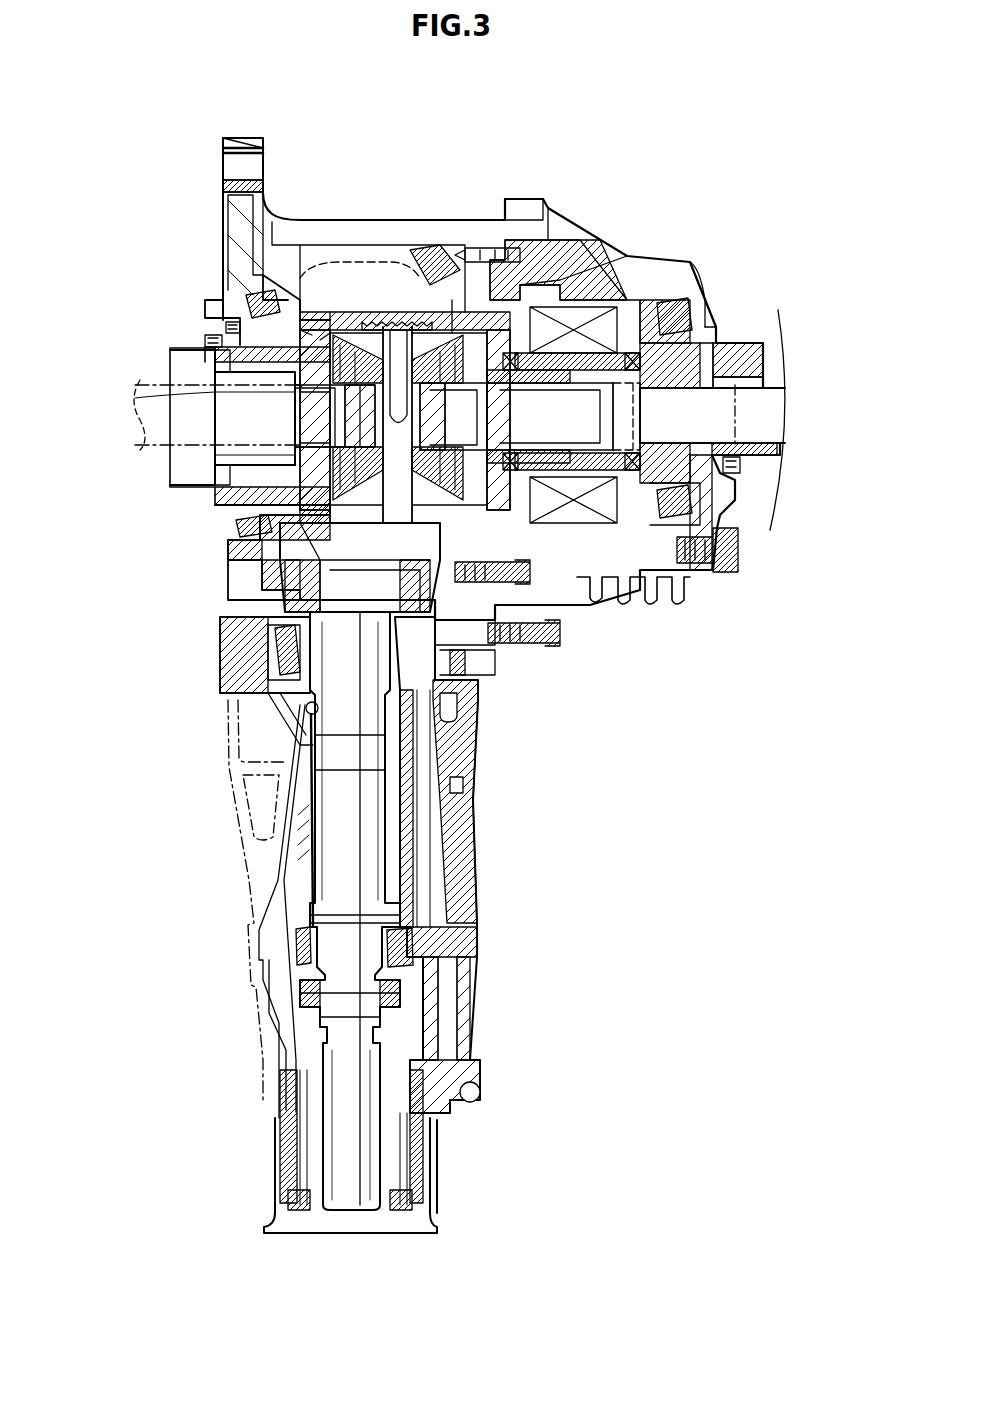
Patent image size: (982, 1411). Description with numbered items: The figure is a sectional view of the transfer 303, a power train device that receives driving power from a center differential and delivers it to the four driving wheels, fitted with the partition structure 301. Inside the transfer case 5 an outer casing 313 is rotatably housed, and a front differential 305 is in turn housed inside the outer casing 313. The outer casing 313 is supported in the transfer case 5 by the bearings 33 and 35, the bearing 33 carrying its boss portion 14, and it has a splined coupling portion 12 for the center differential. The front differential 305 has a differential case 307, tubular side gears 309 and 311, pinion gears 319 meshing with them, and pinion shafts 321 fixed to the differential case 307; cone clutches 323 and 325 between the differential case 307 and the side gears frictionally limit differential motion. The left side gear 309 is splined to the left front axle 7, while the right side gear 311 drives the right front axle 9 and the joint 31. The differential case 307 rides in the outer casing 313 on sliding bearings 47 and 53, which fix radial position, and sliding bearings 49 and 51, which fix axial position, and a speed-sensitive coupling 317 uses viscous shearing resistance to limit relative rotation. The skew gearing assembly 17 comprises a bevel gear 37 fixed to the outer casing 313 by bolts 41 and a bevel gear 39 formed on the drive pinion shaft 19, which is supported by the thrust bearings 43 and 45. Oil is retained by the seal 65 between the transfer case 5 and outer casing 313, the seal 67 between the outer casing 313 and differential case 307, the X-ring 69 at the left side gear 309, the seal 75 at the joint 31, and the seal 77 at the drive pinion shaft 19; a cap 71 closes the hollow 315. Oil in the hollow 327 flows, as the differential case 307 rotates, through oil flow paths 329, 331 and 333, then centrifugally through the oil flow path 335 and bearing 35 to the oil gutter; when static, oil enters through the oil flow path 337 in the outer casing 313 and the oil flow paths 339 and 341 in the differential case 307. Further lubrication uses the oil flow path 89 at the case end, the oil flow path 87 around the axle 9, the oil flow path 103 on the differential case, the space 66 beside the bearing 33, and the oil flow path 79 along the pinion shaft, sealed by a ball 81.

The transfer case 5 is at (525, 192).
The left front axle 7 is at (140, 432).
The right front axle 9 is at (760, 420).
The coupling portion 12 is at (265, 380).
The boss portion 14 is at (258, 318).
The skew gearing assembly 17 is at (508, 678).
The drive pinion shaft 19 is at (345, 808).
The joint 31 is at (770, 452).
The bearing 33 is at (265, 310).
The bearing 35 is at (700, 300).
The bevel gear 37 is at (407, 300).
The bevel gear 39 is at (232, 580).
The bolts 41 is at (515, 242).
The thrust bearing 43 is at (250, 656).
The thrust bearing 45 is at (300, 938).
The sliding bearing 47 is at (240, 522).
The sliding bearing 49 is at (236, 560).
The sliding bearing 51 is at (468, 447).
The sliding bearing 53 is at (518, 438).
The seal 65 is at (213, 342).
The space 66 is at (232, 328).
The seal 67 is at (235, 393).
The X-ring 69 is at (300, 398).
The cap 71 is at (295, 440).
The seal 75 is at (740, 465).
The seal 77 is at (305, 1200).
The oil flow path 79 is at (440, 835).
The ball 81 is at (481, 1092).
The oil flow path 87 is at (735, 345).
The oil flow path 89 is at (700, 300).
The oil flow path 103 is at (250, 603).
The partition structure 301 is at (692, 112).
The transfer 303 is at (312, 108).
The front differential 305 is at (372, 262).
The differential case 307 is at (325, 338).
The left side gear 309 is at (300, 430).
The right side gear 311 is at (498, 530).
The outer casing 313 is at (302, 290).
The hollow 315 is at (323, 525).
The speed-sensitive coupling 317 is at (575, 268).
The pinion gears 319 is at (571, 415).
The pinion shafts 321 is at (398, 450).
The cone clutch 323 is at (345, 345).
The cone clutch 325 is at (470, 300).
The hollow 327 is at (498, 410).
The oil flow path 329 is at (618, 600).
The oil flow path 331 is at (648, 400).
The oil flow path 333 is at (740, 398).
The oil flow path 335 is at (750, 320).
The oil flow path 337 is at (392, 325).
The oil flow path 339 is at (450, 335).
The oil flow path 341 is at (520, 320).